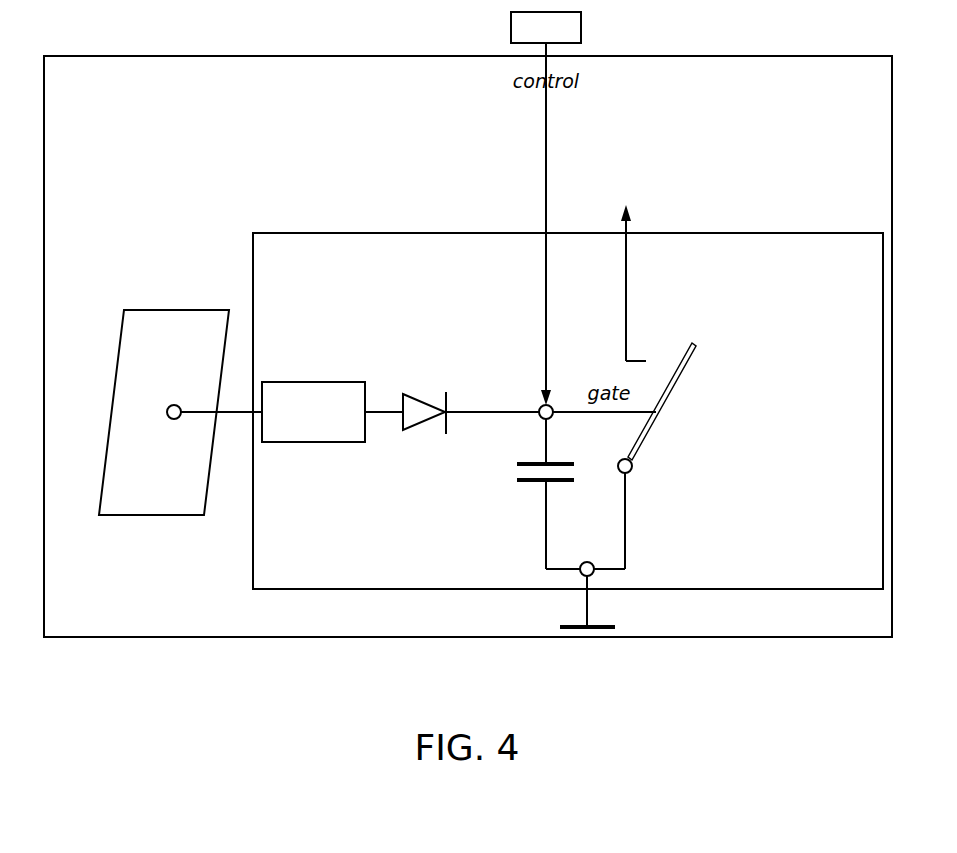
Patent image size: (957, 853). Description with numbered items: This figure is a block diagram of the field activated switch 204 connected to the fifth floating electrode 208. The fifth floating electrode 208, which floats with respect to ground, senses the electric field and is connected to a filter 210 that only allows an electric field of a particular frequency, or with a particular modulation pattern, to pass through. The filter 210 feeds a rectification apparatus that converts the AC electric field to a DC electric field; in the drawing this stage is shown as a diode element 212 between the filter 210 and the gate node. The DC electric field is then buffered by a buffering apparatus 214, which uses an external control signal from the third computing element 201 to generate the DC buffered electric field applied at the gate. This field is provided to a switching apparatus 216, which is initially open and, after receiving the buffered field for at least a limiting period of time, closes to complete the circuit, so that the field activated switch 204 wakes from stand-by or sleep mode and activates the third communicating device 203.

The third computing element 201 is at (546, 208).
The third communicating device 203 is at (627, 271).
The field activated switch 204 is at (374, 255).
The fifth floating electrode 208 is at (135, 346).
The filter 210 is at (314, 381).
The diode 212 is at (420, 400).
The buffering apparatus 214 is at (510, 480).
The switching apparatus 216 is at (665, 407).